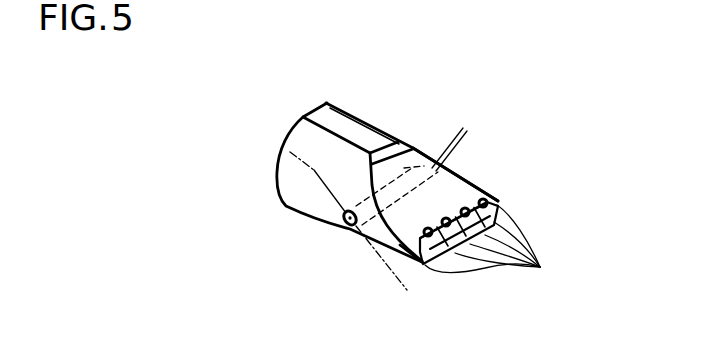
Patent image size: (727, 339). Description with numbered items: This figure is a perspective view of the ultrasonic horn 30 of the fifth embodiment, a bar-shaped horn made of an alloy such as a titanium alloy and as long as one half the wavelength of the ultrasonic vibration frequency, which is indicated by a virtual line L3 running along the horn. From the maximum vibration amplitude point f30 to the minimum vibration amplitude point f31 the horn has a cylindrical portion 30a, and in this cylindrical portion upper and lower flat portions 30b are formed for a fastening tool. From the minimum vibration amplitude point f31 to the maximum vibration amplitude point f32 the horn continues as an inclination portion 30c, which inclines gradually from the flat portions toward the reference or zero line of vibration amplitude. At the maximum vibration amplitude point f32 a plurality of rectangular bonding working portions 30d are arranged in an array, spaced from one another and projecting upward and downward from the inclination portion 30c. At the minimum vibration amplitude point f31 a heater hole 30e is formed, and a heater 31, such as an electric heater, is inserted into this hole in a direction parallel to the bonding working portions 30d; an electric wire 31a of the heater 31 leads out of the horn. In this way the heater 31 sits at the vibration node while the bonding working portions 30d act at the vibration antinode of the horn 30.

The ultrasonic horn 30 is at (283, 210).
The cylindrical portion 30a is at (302, 130).
The flat portions 30b is at (360, 134).
The inclination portion 30c is at (457, 186).
The bonding working portions 30d is at (517, 244).
The heater hole 30e is at (354, 227).
The heater 31 is at (404, 166).
The electric wire 31a is at (456, 126).
The axis line L3 is at (277, 157).
The maximum vibration amplitude point f30 is at (277, 168).
The minimum vibration amplitude point f31 is at (343, 224).
The maximum vibration amplitude point f32 is at (413, 258).